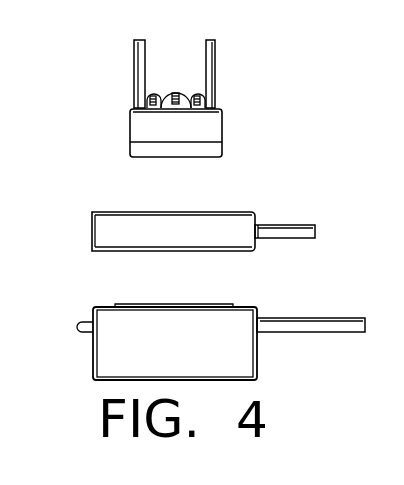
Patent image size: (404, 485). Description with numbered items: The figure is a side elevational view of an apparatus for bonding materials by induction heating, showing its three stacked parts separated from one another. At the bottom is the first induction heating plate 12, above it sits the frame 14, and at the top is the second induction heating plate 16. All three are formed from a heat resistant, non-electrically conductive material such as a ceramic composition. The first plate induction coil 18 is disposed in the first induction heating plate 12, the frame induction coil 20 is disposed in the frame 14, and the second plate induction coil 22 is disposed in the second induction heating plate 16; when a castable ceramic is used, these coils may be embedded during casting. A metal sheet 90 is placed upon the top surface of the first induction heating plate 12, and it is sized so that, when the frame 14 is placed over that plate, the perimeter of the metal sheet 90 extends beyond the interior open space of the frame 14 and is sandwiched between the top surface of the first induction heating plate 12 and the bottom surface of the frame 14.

The first induction heating plate 12 is at (128, 350).
The frame 14 is at (112, 230).
The second induction heating plate 16 is at (210, 134).
The first plate induction coil 18 is at (307, 326).
The frame induction coil 20 is at (277, 231).
The second plate induction coil 22 is at (168, 91).
The metal sheet 90 is at (163, 305).